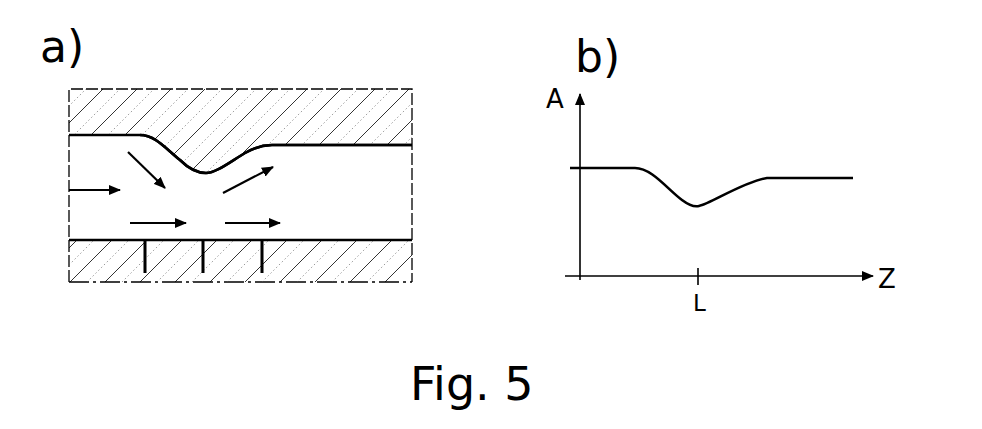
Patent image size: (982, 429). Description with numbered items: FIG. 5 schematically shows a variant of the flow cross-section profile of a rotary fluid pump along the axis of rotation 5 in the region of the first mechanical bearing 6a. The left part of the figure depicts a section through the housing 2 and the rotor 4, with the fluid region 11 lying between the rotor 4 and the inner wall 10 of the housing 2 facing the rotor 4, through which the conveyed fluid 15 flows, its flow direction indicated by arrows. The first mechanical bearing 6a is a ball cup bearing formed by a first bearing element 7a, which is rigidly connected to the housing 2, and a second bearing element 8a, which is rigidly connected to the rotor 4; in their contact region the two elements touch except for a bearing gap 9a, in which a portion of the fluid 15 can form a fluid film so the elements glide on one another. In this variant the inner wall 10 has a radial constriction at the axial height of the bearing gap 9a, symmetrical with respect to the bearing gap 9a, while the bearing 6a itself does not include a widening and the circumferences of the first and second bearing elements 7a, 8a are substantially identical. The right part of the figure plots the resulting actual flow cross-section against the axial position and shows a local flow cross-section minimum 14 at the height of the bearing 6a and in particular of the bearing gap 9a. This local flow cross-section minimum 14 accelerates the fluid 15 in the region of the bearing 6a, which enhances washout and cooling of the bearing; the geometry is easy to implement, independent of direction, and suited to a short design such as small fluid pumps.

The housing 2 is at (159, 108).
The inner wall 10 is at (302, 147).
The fluid region 11 is at (385, 168).
The fluid 15 is at (94, 190).
The axis of rotation 5 is at (80, 283).
The rotor 4 is at (323, 258).
The first bearing element 7a is at (168, 263).
The bearing gap 9a is at (208, 263).
The second bearing element 8a is at (233, 255).
The first mechanical bearing 6a is at (283, 352).
The local flow cross-section minimum 14 is at (700, 207).